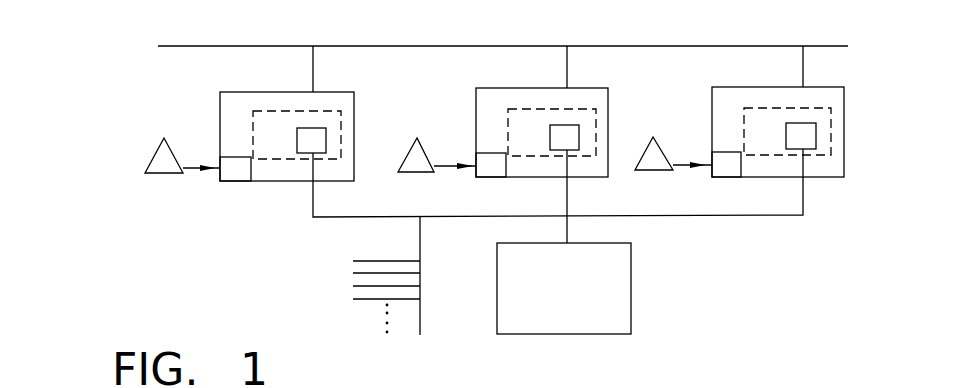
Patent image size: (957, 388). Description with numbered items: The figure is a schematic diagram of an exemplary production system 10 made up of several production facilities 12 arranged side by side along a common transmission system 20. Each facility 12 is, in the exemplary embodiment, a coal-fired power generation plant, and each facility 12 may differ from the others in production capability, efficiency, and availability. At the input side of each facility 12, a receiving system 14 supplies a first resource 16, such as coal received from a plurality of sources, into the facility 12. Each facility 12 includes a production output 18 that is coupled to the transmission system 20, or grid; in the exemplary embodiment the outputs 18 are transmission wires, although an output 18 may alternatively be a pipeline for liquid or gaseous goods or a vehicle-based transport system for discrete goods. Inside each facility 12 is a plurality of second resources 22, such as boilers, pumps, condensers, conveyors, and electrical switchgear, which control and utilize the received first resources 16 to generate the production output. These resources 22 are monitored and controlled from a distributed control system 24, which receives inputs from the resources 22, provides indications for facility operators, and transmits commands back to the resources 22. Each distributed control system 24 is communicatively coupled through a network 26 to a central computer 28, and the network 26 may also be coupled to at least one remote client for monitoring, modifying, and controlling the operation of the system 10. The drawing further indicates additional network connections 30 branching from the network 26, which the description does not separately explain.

The production system 10 is at (110, 53).
The production facility 12 is at (340, 91).
The receiving system 14 is at (235, 181).
The first resource 16 is at (165, 173).
The production output 18 is at (313, 68).
The transmission system 20 is at (522, 45).
The second resources 22 is at (341, 122).
The distributed control system 24 is at (326, 141).
The network 26 is at (717, 216).
The central computer 28 is at (581, 299).
The additional network connections 30 is at (348, 252).